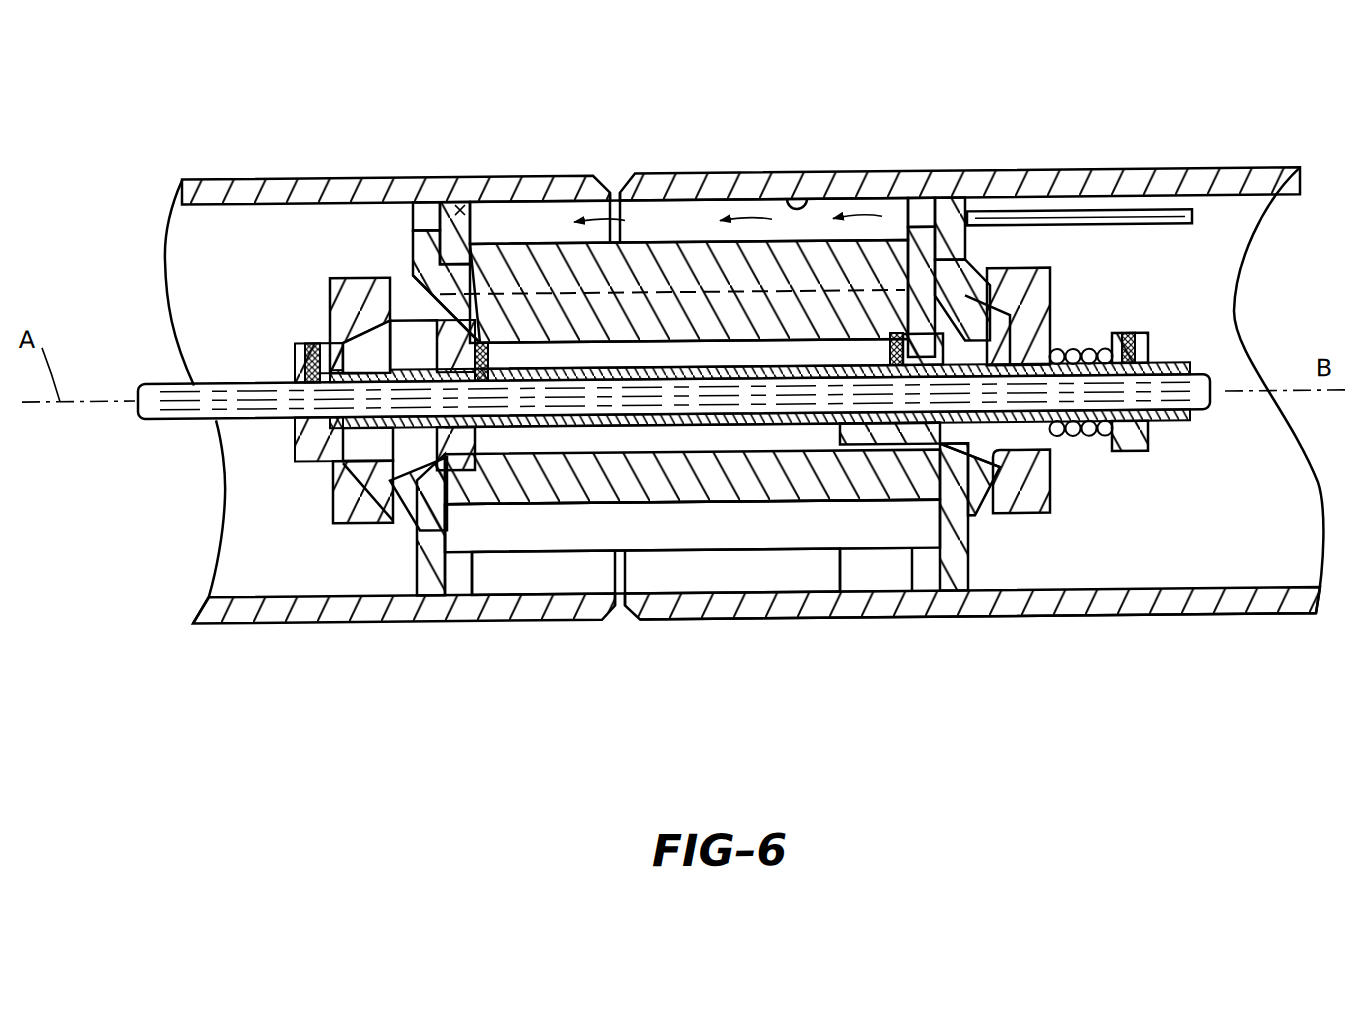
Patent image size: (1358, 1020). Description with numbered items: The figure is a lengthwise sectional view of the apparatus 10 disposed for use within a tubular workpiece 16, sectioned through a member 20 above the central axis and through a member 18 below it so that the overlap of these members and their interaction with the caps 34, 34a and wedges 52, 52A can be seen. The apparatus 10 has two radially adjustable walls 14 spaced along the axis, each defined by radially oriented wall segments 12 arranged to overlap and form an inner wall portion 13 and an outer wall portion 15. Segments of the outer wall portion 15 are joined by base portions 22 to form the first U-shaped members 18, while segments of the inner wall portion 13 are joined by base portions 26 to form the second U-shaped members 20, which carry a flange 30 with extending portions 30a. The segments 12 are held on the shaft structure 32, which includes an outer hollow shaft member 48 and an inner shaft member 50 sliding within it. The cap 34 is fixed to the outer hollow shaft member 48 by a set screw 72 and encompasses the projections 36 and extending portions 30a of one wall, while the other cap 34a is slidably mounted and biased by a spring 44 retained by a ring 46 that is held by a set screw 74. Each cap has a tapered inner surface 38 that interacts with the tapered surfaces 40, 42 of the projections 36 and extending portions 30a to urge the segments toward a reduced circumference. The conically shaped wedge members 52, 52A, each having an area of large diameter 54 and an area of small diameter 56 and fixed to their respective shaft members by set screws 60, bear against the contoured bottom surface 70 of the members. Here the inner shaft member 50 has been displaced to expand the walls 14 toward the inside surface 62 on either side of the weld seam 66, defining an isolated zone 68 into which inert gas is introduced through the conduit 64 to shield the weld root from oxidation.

The apparatus 10 is at (799, 570).
The wall segments 12 is at (420, 205).
The inner wall portion 13 is at (448, 194).
The radially adjustable wall 14 is at (385, 197).
The outer wall portion 15 is at (419, 194).
The tubular workpiece 16 is at (1108, 176).
The first set of U-shaped members 18 is at (591, 508).
The second set of U-shaped members 20 is at (656, 242).
The base portions 22 is at (715, 487).
The base portions 26 is at (722, 262).
The flange 30 is at (611, 314).
The extending portions 30a is at (396, 303).
The shaft structure 32 is at (992, 293).
The cap 34 is at (332, 518).
The cap 34a is at (1058, 510).
The projections 36 is at (394, 521).
The tapered inner surface 38 is at (292, 460).
The tapered surface 40 is at (404, 523).
The tapered surface 42 is at (390, 240).
The spring 44 is at (1085, 444).
The ring 46 is at (1150, 347).
The outer hollow shaft member 48 is at (732, 362).
The inner shaft member 50 is at (789, 445).
The wedge member 52 is at (533, 556).
The wedge member 52A is at (845, 566).
The area of large diameter 54 is at (440, 322).
The area of small diameter 56 is at (545, 342).
The set screw 60 is at (479, 340).
The inside surface 62 is at (797, 200).
The conduit 64 is at (1204, 223).
The weld seam 66 is at (613, 176).
The isolated zone 68 is at (675, 212).
The bottom surface 70 is at (672, 455).
The set screw 72 is at (304, 362).
The set screw 74 is at (1130, 340).